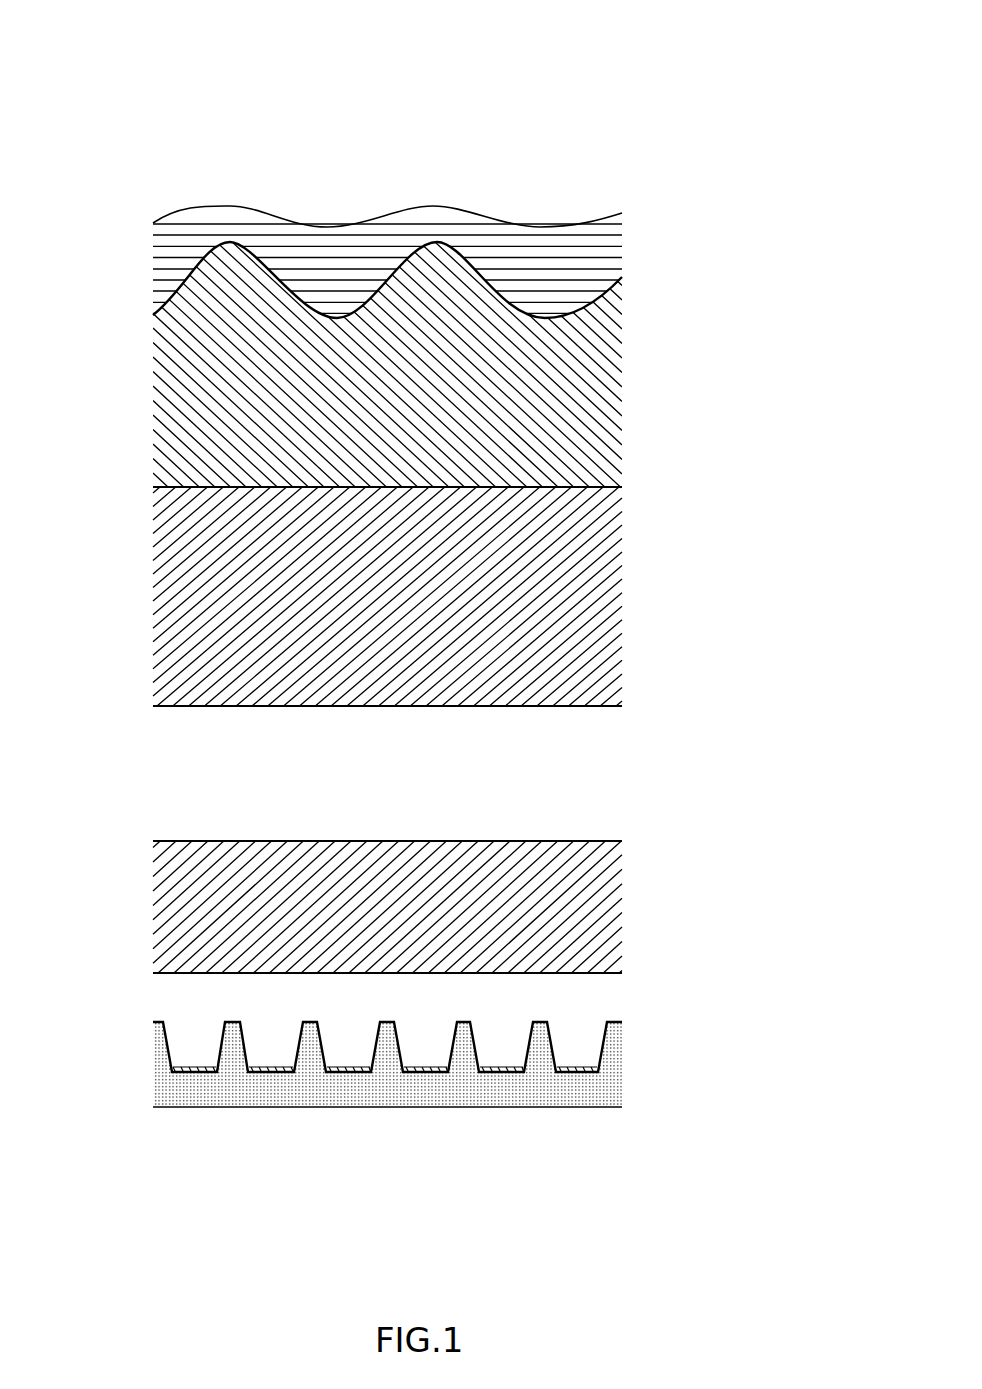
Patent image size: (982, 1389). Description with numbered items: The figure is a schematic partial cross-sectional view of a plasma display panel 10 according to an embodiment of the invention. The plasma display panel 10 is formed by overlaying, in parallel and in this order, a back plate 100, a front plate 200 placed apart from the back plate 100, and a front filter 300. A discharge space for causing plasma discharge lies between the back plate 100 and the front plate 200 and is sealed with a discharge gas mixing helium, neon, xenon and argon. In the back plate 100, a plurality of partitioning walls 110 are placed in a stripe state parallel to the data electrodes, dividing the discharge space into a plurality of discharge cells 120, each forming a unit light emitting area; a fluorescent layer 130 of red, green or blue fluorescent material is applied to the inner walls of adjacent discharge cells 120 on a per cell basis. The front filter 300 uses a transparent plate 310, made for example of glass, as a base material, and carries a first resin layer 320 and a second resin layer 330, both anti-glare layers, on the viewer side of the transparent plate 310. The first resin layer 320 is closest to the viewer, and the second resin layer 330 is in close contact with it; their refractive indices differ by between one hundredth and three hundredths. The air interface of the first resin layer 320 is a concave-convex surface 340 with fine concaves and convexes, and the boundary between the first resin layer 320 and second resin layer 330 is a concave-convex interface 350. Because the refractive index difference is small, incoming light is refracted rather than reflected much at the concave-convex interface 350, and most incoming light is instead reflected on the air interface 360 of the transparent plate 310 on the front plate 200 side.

The plasma display panel 10 is at (799, 58).
The back plate 100 is at (688, 1007).
The partitioning walls 110 is at (360, 1107).
The discharge cells 120 is at (283, 1040).
The fluorescent layer 130 is at (218, 1068).
The front plate 200 is at (688, 827).
The front filter 300 is at (688, 171).
The transparent plate 310 is at (153, 598).
The first resin layer 320 is at (153, 247).
The second resin layer 330 is at (157, 392).
The concave-convex surface 340 is at (453, 206).
The concave-convex interface 350 is at (622, 279).
The air interface 360 is at (548, 706).